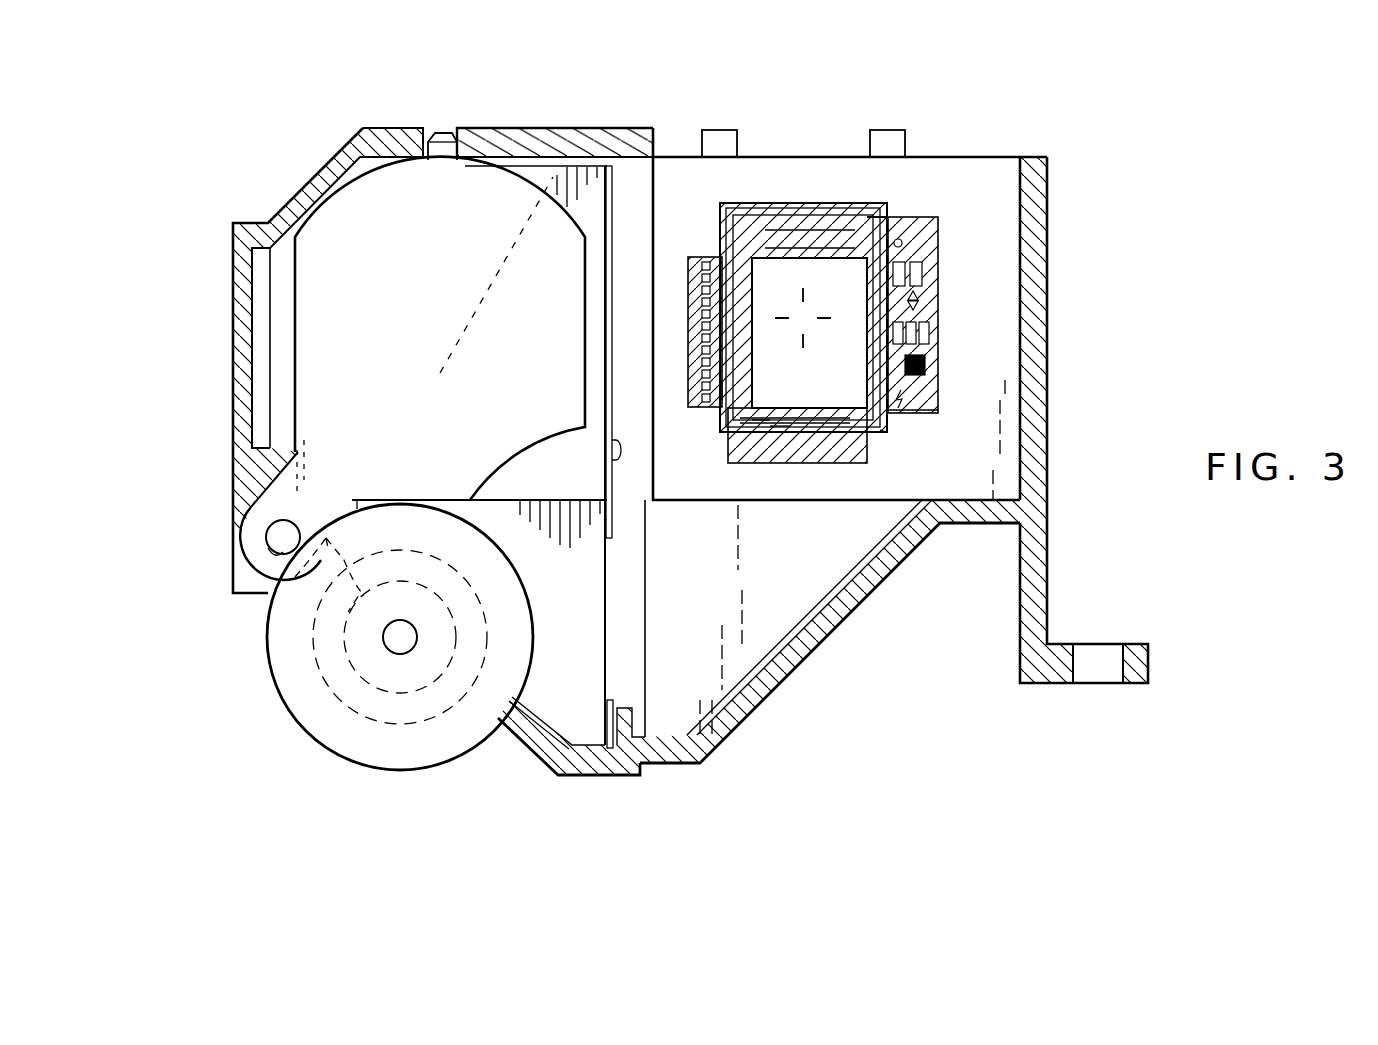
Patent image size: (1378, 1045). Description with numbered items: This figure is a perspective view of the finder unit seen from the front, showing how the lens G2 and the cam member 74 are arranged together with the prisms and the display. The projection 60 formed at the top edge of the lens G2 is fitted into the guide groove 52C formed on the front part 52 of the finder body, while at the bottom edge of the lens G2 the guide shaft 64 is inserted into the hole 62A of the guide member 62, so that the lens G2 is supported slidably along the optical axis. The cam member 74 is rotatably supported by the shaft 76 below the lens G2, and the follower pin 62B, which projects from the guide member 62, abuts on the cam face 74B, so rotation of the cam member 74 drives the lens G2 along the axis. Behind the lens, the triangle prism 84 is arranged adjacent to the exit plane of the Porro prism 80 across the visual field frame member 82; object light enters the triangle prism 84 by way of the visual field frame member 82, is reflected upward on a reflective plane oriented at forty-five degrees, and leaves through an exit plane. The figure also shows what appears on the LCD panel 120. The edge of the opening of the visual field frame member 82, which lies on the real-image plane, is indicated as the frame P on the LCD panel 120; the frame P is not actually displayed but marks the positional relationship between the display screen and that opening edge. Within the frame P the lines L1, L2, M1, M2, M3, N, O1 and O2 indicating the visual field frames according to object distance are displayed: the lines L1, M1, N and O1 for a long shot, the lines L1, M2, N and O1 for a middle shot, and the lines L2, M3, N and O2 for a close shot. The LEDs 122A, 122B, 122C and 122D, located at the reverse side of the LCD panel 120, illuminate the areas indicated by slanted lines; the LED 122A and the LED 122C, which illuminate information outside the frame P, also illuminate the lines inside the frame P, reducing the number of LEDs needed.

The front part 52 is at (478, 127).
The guide groove 52C is at (423, 137).
The projection 60 is at (443, 133).
The lens G2 is at (350, 240).
The guide member 62 is at (272, 507).
The guide shaft 64 is at (283, 533).
The hole 62A is at (277, 552).
The follower pin 62B is at (325, 583).
The cam member 74 is at (299, 748).
The shaft 76 is at (400, 640).
The cam face 74B is at (436, 697).
The Porro prism 80 is at (566, 688).
The visual field frame member 82 is at (612, 522).
The triangle prism 84 is at (737, 635).
The LCD panel 120 is at (998, 317).
The LED 122A is at (933, 262).
The LED 122B is at (795, 455).
The LED 122C is at (703, 257).
The LED 122D is at (783, 220).
The line M1 is at (820, 215).
The line M2 is at (843, 237).
The line M3 is at (860, 203).
The line L1 is at (940, 217).
The line L2 is at (873, 207).
The line N is at (723, 383).
The line O1 is at (758, 427).
The line O2 is at (773, 425).
The frame P is at (888, 432).